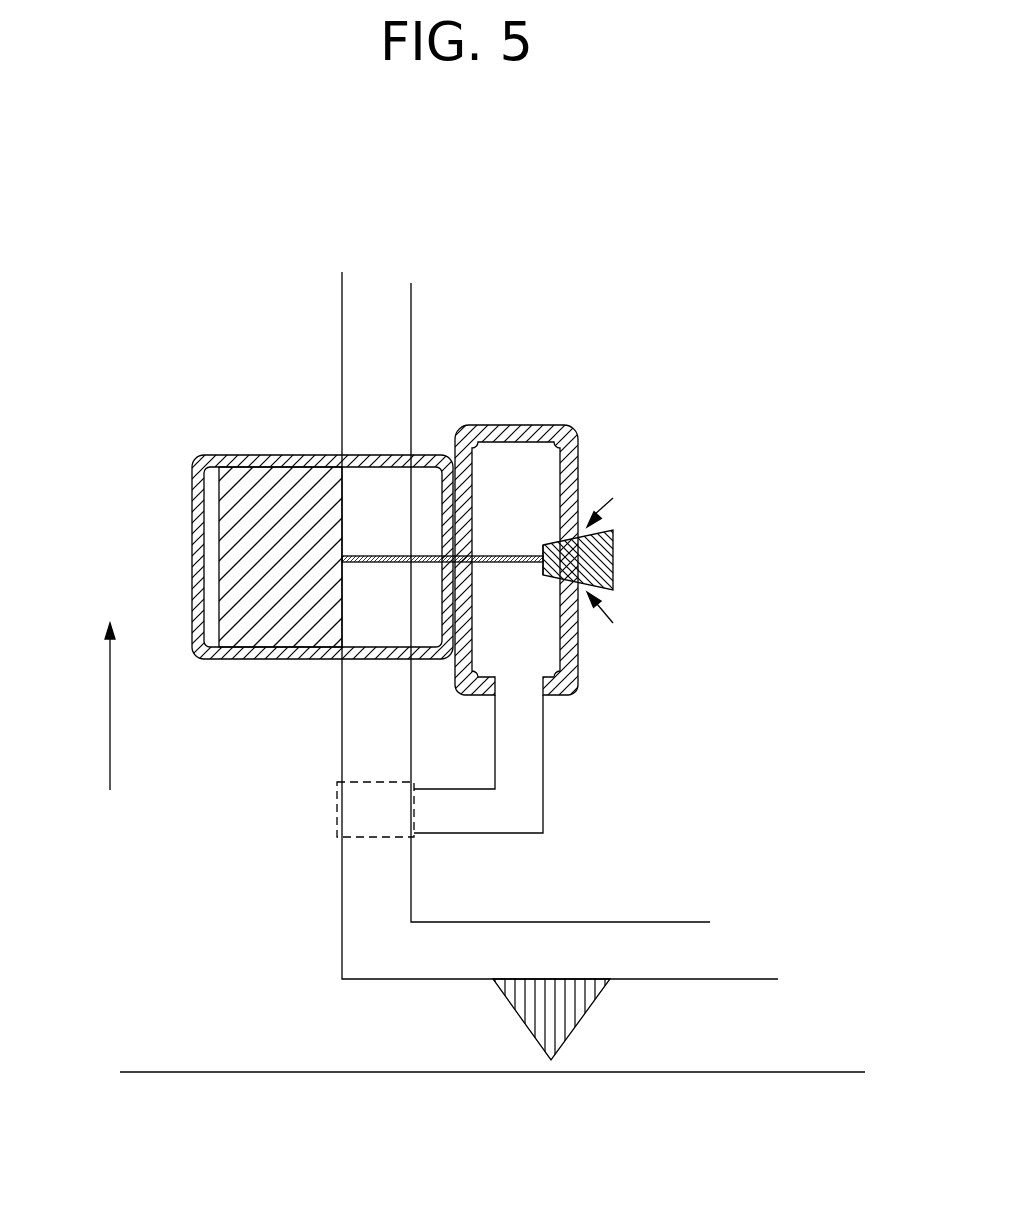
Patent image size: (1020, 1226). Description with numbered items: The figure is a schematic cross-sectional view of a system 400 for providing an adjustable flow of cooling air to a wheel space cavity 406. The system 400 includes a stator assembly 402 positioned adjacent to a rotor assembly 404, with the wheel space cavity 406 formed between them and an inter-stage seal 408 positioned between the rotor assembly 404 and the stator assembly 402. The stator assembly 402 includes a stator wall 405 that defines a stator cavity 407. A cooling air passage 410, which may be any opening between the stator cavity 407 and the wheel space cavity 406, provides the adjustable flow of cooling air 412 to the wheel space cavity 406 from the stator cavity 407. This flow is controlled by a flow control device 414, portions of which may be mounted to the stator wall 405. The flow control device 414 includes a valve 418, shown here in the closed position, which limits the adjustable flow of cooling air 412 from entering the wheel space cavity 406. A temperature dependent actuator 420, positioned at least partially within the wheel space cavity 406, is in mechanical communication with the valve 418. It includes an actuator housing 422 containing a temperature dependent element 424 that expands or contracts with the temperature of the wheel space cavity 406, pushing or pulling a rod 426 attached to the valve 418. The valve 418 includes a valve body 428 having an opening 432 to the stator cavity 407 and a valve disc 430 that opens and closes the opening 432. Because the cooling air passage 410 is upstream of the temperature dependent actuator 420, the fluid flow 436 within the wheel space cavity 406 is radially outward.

The system 400 is at (648, 246).
The stator assembly 402 is at (306, 309).
The rotor assembly 404 is at (235, 1072).
The stator wall 405 is at (342, 378).
The wheel space cavity 406 is at (253, 898).
The stator cavity 407 is at (793, 619).
The inter-stage seal 408 is at (580, 1018).
The cooling air passage 410 is at (338, 807).
The adjustable flow of cooling air 412 is at (607, 607).
The flow control device 414 is at (585, 507).
The valve 418 is at (672, 487).
The temperature dependent actuator 420 is at (311, 522).
The actuator housing 422 is at (192, 492).
The temperature dependent element 424 is at (302, 556).
The rod 426 is at (378, 556).
The valve body 428 is at (578, 663).
The valve disc 430 is at (615, 552).
The opening 432 is at (542, 525).
The fluid flow 436 is at (110, 710).